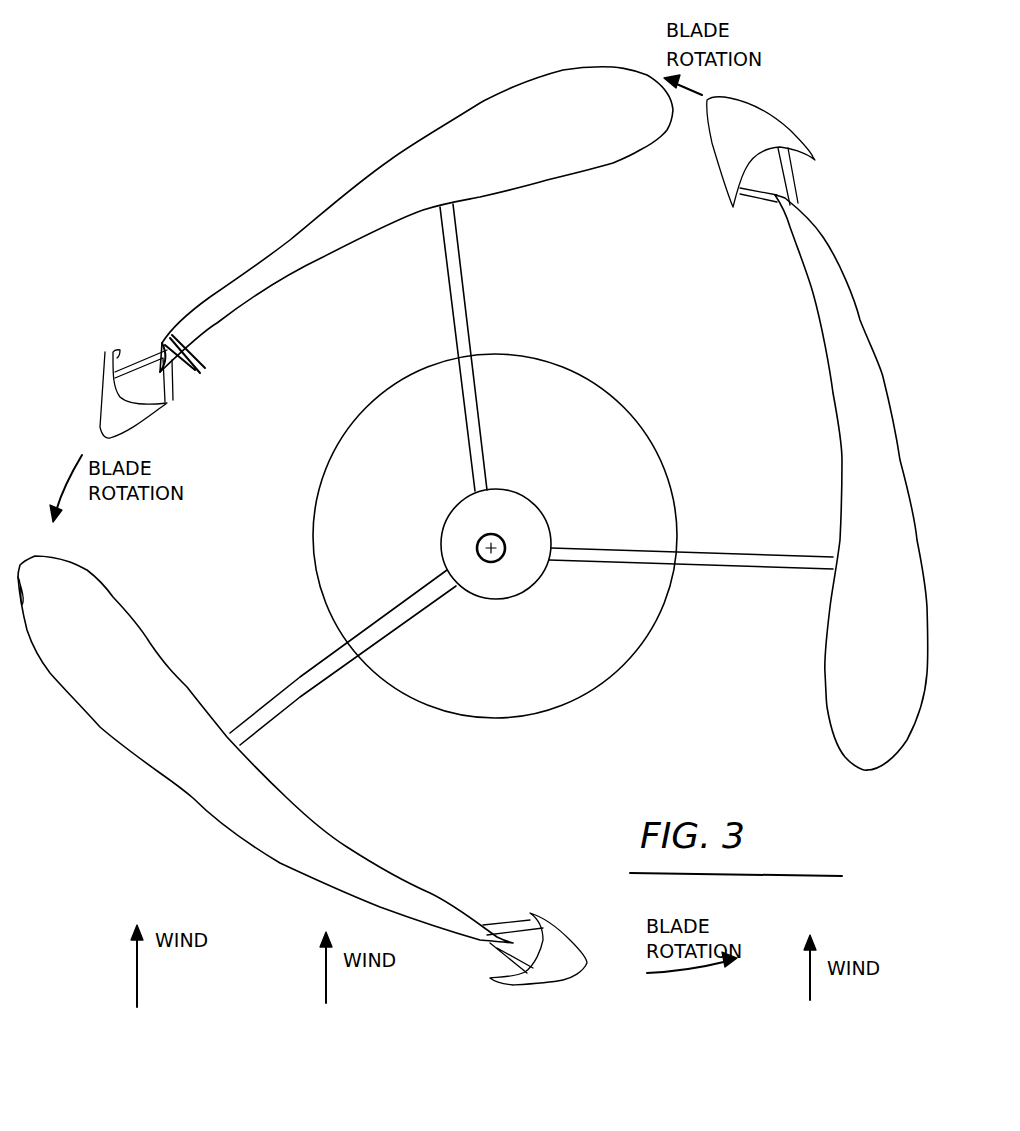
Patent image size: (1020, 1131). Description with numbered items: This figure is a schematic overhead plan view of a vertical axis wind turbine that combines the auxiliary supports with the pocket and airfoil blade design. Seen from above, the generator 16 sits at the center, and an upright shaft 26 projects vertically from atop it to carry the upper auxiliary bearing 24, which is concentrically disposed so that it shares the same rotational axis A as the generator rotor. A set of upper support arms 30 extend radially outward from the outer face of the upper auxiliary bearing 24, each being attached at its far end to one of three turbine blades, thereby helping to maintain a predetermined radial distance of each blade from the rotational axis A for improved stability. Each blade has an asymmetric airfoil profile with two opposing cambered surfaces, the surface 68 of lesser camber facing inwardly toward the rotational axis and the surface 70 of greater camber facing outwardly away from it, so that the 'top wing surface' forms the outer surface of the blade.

The generator 16 is at (536, 387).
The upper auxiliary bearing 24 is at (527, 497).
The upright shaft 26 is at (498, 535).
The rotational axis A is at (496, 563).
The upper support arm 30 is at (727, 563).
The cambered surface of lesser camber 68 is at (832, 410).
The cambered surface of greater camber 70 is at (877, 350).